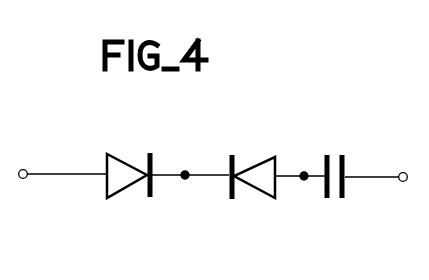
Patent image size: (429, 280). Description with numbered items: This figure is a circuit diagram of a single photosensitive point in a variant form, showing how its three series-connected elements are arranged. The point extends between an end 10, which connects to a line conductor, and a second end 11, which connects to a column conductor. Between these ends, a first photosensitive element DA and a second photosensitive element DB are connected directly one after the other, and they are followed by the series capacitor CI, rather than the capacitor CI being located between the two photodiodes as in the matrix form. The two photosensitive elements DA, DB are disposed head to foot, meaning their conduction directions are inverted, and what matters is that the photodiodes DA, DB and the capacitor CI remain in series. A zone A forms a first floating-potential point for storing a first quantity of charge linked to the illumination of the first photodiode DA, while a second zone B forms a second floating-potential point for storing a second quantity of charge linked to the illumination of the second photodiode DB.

The end 10 is at (24, 169).
The second end 11 is at (403, 172).
The first photosensitive element DA is at (120, 197).
The second photosensitive element DB is at (253, 193).
The zone A is at (185, 170).
The second zone B is at (304, 172).
The capacitor CI is at (330, 200).